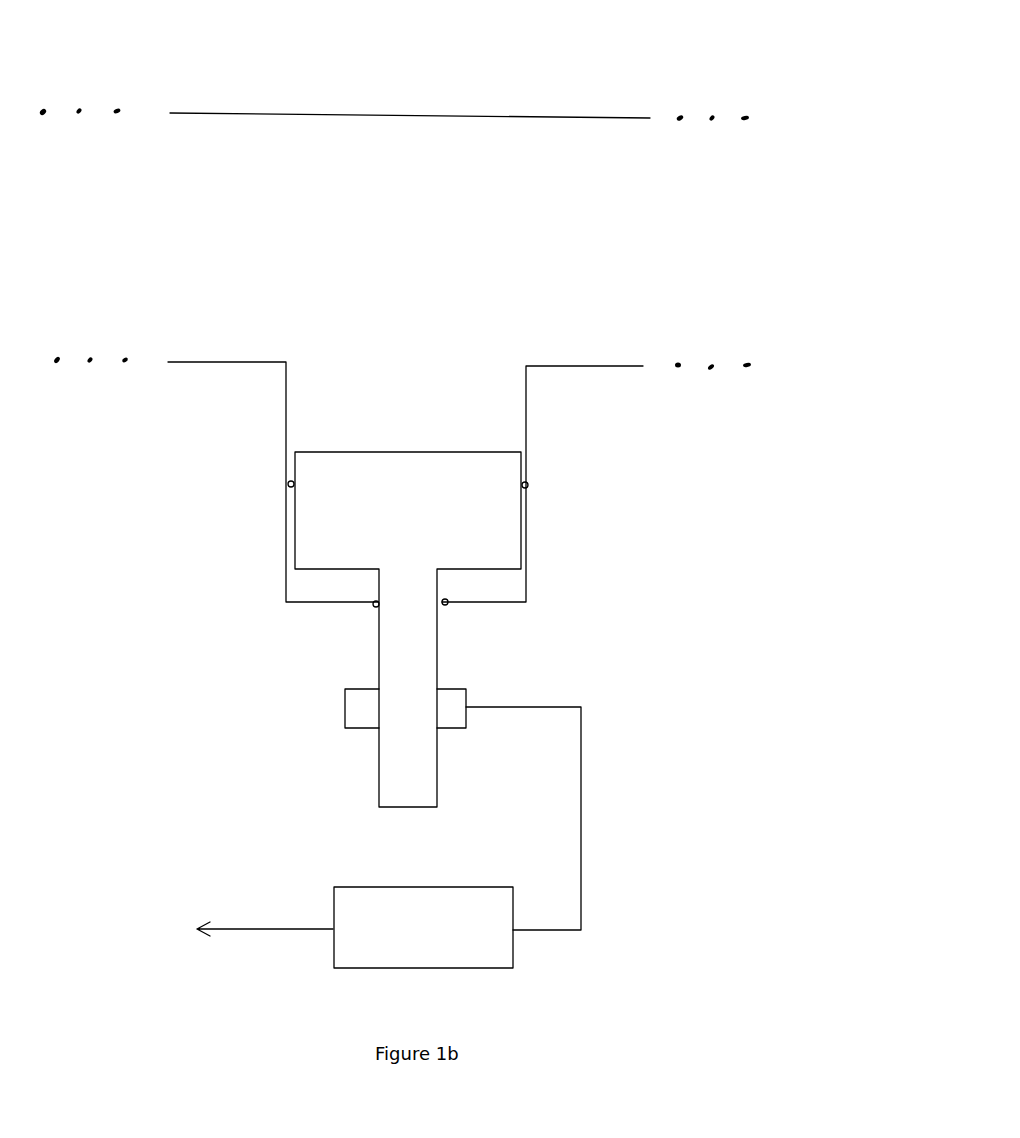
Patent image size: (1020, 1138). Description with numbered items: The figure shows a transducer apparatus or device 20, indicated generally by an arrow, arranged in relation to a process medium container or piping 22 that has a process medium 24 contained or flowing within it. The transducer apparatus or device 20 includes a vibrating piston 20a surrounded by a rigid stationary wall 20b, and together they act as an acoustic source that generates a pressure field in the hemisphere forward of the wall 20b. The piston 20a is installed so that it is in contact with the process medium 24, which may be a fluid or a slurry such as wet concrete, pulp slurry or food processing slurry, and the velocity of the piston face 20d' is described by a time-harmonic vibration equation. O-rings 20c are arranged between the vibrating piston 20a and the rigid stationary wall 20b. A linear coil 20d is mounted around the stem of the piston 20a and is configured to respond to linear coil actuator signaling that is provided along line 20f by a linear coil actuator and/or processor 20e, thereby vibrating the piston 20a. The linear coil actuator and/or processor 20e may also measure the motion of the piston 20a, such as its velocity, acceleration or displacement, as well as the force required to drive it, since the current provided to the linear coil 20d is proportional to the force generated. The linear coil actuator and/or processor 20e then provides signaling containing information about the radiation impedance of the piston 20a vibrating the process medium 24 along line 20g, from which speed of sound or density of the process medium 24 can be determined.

The process medium container or piping 22 is at (588, 118).
The process medium 24 is at (430, 247).
The transducer apparatus or device 20 is at (210, 752).
The vibrating piston 20a is at (408, 629).
The rigid stationary wall 20b is at (528, 414).
The O-rings 20c is at (375, 605).
The linear coil 20d is at (514, 654).
The piston face 20d' is at (472, 417).
The linear coil actuator and/or processor 20e is at (515, 947).
The line for providing linear coil actuator signaling 20f is at (582, 745).
The line for providing signaling containing information about radiation impedance 20g is at (268, 929).